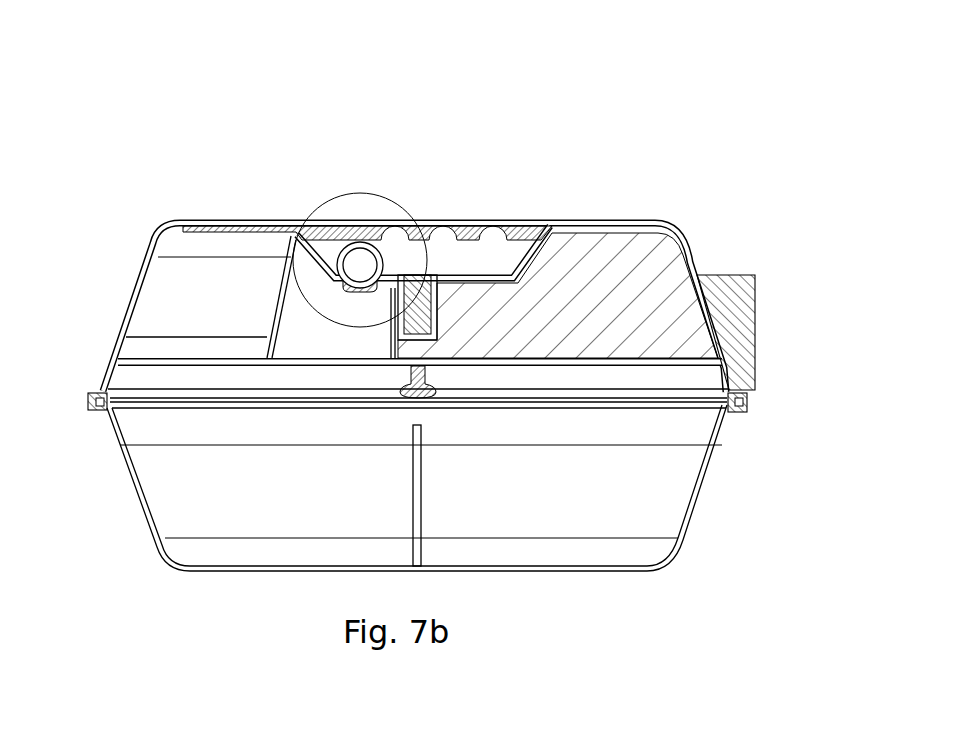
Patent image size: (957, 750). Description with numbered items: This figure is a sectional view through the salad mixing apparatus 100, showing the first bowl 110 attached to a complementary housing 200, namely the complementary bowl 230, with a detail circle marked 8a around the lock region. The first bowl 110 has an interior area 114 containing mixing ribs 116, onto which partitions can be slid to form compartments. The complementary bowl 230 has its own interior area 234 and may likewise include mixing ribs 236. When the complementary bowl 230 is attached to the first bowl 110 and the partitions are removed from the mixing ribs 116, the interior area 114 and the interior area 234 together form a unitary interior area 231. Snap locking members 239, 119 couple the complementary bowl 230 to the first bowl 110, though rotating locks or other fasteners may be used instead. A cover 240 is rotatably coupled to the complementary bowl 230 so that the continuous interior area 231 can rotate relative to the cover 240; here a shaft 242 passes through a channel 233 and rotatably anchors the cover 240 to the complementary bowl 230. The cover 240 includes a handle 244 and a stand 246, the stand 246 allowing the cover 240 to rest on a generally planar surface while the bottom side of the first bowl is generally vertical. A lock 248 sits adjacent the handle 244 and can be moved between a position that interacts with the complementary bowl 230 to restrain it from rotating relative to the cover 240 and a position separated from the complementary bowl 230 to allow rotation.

The salad mixing apparatus 100 is at (595, 88).
The first bowl 110 is at (697, 549).
The interior area 114 is at (571, 522).
The mixing ribs 116 is at (413, 497).
The snap locking member 119 is at (96, 410).
The complementary housing 200 is at (633, 213).
The complementary bowl 230 is at (591, 213).
The unitary interior area 231 is at (191, 430).
The channel 233 is at (437, 312).
The interior area 234 is at (174, 299).
The mixing ribs 236 is at (281, 300).
The snap locking member 239 is at (93, 394).
The cover 240 is at (292, 212).
The shaft 242 is at (400, 345).
The handle 244 is at (503, 228).
The stand 246 is at (757, 325).
The lock 248 is at (357, 240).
The detail view reference 8a is at (396, 230).